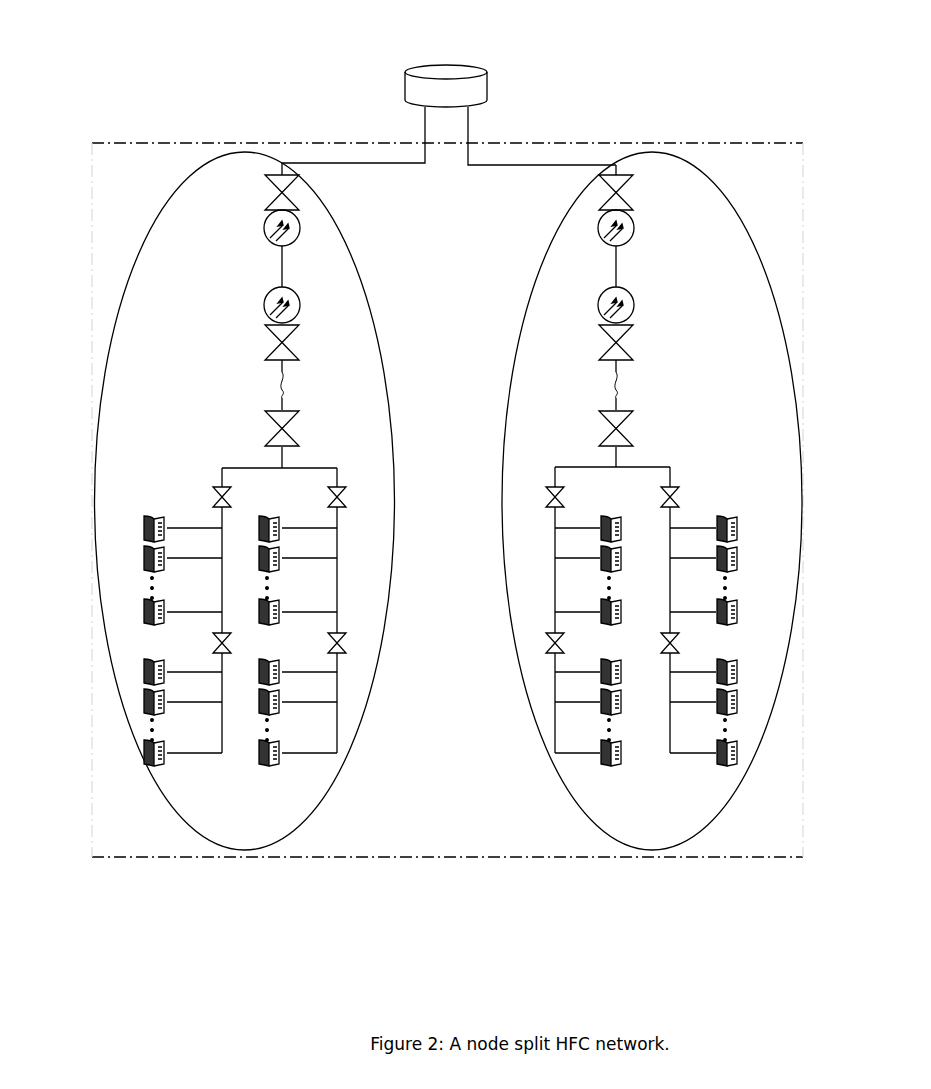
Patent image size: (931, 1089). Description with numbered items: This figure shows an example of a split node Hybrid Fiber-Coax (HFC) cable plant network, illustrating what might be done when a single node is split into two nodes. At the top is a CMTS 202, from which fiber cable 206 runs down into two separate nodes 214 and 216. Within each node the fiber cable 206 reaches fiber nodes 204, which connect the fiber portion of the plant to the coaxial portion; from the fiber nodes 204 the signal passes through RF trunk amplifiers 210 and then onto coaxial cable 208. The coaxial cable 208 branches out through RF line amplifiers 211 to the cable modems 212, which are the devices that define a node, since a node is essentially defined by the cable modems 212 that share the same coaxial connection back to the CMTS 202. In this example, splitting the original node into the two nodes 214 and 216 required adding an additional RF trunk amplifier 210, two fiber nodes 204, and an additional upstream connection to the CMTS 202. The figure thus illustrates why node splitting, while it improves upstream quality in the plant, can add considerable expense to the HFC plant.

The CMTS 202 is at (446, 62).
The fiber nodes 204 is at (598, 240).
The fiber cable 206 is at (614, 268).
The coaxial cable 208 is at (612, 458).
The RF trunk amplifiers 210 is at (296, 427).
The RF line amplifiers 211 is at (546, 497).
The cable modems 212 is at (603, 763).
The node 214 is at (243, 857).
The node 216 is at (653, 857).